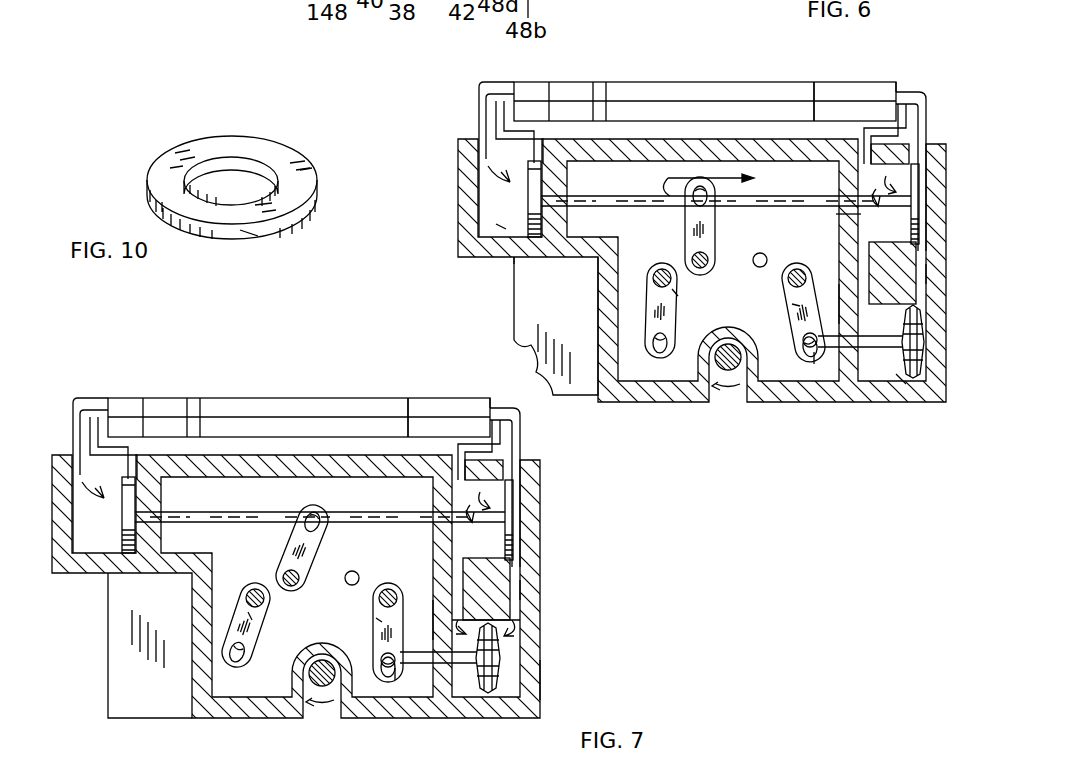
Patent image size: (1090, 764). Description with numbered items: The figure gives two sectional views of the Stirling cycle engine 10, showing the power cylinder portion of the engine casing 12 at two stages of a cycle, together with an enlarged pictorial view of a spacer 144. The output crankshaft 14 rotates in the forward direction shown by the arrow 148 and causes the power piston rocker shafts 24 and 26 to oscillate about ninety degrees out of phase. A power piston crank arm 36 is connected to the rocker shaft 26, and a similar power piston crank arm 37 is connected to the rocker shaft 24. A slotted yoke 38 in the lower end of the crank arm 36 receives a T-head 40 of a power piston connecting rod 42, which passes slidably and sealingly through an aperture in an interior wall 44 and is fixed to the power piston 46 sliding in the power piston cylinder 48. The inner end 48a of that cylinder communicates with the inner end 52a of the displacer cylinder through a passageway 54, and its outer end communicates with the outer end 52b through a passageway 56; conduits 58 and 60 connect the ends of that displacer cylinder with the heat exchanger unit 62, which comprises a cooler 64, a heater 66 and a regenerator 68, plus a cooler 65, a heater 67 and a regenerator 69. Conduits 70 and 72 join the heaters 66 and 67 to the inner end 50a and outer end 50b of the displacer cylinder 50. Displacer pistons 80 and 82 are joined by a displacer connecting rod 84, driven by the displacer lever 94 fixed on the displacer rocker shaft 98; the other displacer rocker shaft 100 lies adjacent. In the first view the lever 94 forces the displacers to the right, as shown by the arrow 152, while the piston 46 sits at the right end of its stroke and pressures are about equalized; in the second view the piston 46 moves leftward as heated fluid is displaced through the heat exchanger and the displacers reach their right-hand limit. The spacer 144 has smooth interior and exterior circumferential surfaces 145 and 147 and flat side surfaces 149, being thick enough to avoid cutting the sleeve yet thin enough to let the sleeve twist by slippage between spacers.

In FIG. 7, the Stirling cycle engine 10 is at (566, 636).
In FIG. 6, the Stirling cycle engine 10 is at (479, 271).
In FIG. 7, the engine casing 12 is at (541, 486).
In FIG. 6, the engine casing 12 is at (702, 270).
In FIG. 7, the output crankshaft 14 is at (309, 672).
In FIG. 6, the output crankshaft 14 is at (709, 338).
In FIG. 7, the power piston rocker shaft 24 is at (264, 605).
In FIG. 6, the power piston rocker shaft 24 is at (650, 295).
In FIG. 7, the power piston rocker shaft 26 is at (386, 590).
In FIG. 6, the power piston rocker shaft 26 is at (803, 298).
In FIG. 7, the power piston crank arm 36 is at (375, 620).
In FIG. 6, the power piston crank arm 36 is at (765, 304).
In FIG. 7, the power piston crank arm 37 is at (248, 610).
In FIG. 6, the power piston crank arm 37 is at (706, 283).
In FIG. 7, the slotted yoke 38 is at (394, 682).
In FIG. 6, the slotted yoke 38 is at (822, 391).
In FIG. 7, the T-head 40 is at (382, 660).
In FIG. 6, the T-head 40 is at (786, 329).
In FIG. 7, the power piston connecting rod 42 is at (428, 668).
In FIG. 6, the power piston connecting rod 42 is at (860, 383).
In FIG. 7, the interior wall 44 is at (433, 604).
In FIG. 6, the interior wall 44 is at (822, 284).
In FIG. 7, the power piston 46 is at (488, 694).
In FIG. 6, the power piston 46 is at (925, 367).
In FIG. 7, the power piston cylinder 48 is at (525, 668).
In FIG. 6, the inner end of power piston cylinder 48a is at (898, 419).
In FIG. 7, the displacer cylinder 50 is at (97, 560).
In FIG. 6, the inner end of displacer cylinder 50a is at (556, 326).
In FIG. 6, the outer end of displacer cylinder 50b is at (454, 222).
In FIG. 7, the inner end of displacer cylinder 52a is at (465, 503).
In FIG. 6, the inner end of displacer cylinder 52a is at (837, 187).
In FIG. 6, the outer end of displacer cylinder 52b is at (825, 219).
In FIG. 7, the passageway 54 is at (480, 575).
In FIG. 6, the passageway 54 is at (922, 271).
In FIG. 7, the passageway 56 is at (515, 592).
In FIG. 6, the passageway 56 is at (947, 289).
In FIG. 7, the conduit 58 is at (503, 446).
In FIG. 6, the conduit 58 is at (885, 107).
In FIG. 7, the conduit 60 is at (521, 424).
In FIG. 6, the conduit 60 is at (915, 139).
In FIG. 7, the heat exchanger unit 62 is at (288, 396).
In FIG. 6, the heat exchanger unit 62 is at (705, 73).
In FIG. 7, the cooler 64 is at (423, 428).
In FIG. 6, the cooler 64 is at (829, 85).
In FIG. 7, the cooler 65 is at (466, 402).
In FIG. 6, the cooler 65 is at (871, 60).
In FIG. 7, the heater 66 is at (145, 415).
In FIG. 6, the heater 66 is at (538, 85).
In FIG. 7, the heater 67 is at (180, 404).
In FIG. 6, the heater 67 is at (580, 85).
In FIG. 7, the regenerator 68 is at (218, 426).
In FIG. 6, the regenerator 68 is at (626, 85).
In FIG. 7, the regenerator 69 is at (356, 410).
In FIG. 6, the regenerator 69 is at (772, 85).
In FIG. 7, the conduit 70 is at (93, 417).
In FIG. 6, the conduit 70 is at (486, 132).
In FIG. 7, the conduit 72 is at (74, 410).
In FIG. 6, the conduit 72 is at (462, 158).
In FIG. 7, the displacer piston 80 is at (122, 520).
In FIG. 6, the displacer piston 80 is at (475, 199).
In FIG. 7, the displacer piston 82 is at (505, 548).
In FIG. 6, the displacer piston 82 is at (932, 204).
In FIG. 7, the displacer connecting rod 84 is at (193, 512).
In FIG. 6, the displacer connecting rod 84 is at (726, 187).
In FIG. 7, the displacer lever 94 is at (300, 548).
In FIG. 6, the displacer lever 94 is at (728, 226).
In FIG. 7, the displacer rocker shaft 98 is at (298, 572).
In FIG. 6, the displacer rocker shaft 98 is at (725, 251).
In FIG. 7, the displacer rocker shaft 100 is at (352, 571).
In FIG. 6, the displacer rocker shaft 100 is at (760, 274).
In FIG. 10, the spacer 144 is at (263, 148).
In FIG. 10, the interior circumferential surface 145 is at (196, 162).
In FIG. 10, the exterior circumferential surface 147 is at (268, 236).
In FIG. 7, the arrow 148 is at (322, 708).
In FIG. 6, the arrow 148 is at (727, 411).
In FIG. 10, the flat side surface 149 is at (300, 168).
In FIG. 6, the arrow 152 is at (700, 201).